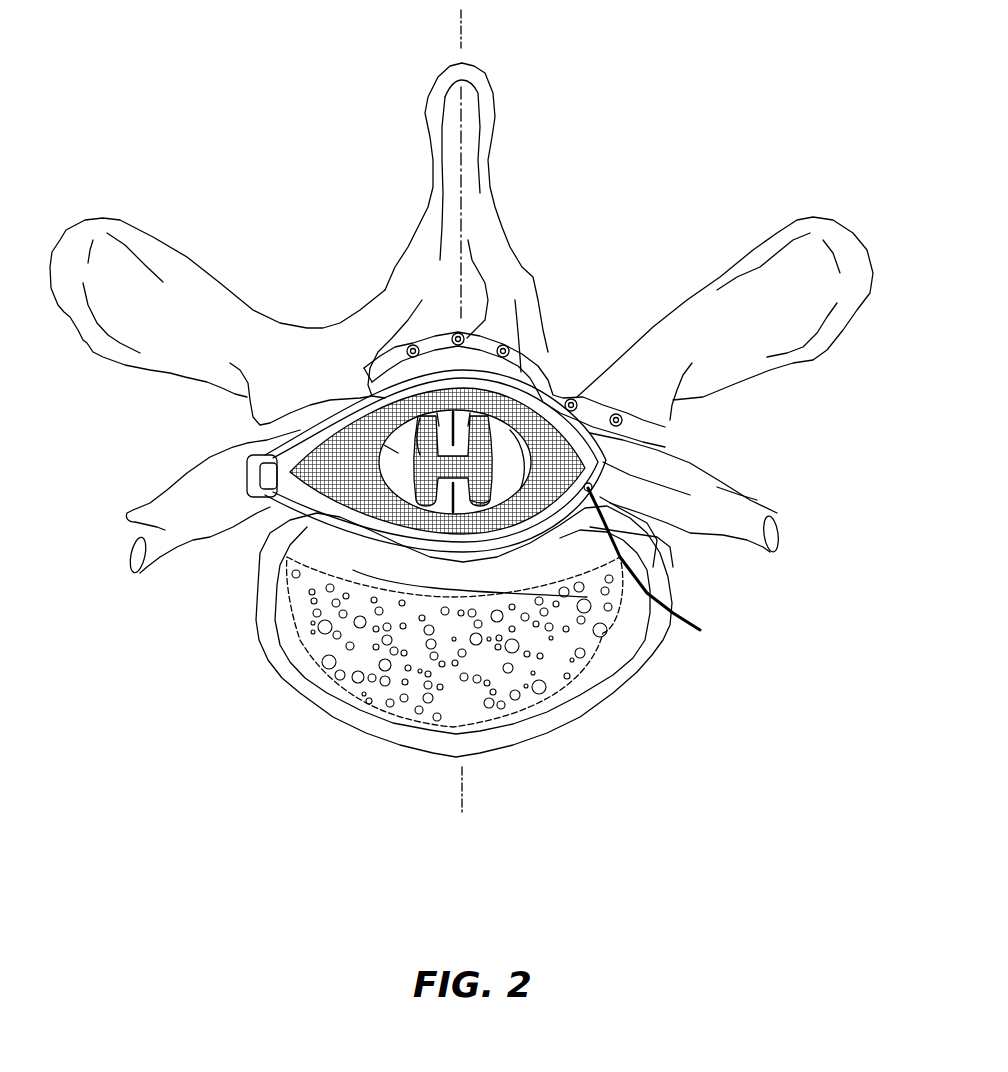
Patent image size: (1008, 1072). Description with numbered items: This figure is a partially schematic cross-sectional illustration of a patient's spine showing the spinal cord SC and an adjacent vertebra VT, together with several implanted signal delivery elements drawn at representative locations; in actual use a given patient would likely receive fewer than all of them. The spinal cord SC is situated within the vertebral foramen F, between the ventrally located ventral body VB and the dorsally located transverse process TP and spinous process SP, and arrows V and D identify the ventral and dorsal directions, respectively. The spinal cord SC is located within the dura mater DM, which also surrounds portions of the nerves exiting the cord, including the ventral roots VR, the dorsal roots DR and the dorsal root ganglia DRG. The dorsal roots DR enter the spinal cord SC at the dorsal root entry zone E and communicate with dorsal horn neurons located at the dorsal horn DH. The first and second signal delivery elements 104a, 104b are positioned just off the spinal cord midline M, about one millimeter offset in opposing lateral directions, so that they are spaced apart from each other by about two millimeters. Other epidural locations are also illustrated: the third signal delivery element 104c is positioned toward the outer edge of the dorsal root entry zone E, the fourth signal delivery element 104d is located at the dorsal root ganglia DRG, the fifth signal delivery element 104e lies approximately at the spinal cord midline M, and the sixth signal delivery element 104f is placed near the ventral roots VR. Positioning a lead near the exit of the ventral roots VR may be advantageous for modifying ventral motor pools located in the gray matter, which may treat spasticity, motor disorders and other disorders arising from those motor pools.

The dorsal direction arrow D is at (462, 28).
The ventral direction arrow V is at (460, 793).
The spinous process SP is at (486, 112).
The spinal cord midline M is at (462, 167).
The transverse process TP is at (93, 248).
The spinal cord SC is at (398, 448).
The dorsal root entry zone E is at (552, 360).
The vertebra VT is at (215, 417).
The dorsal roots DR is at (660, 445).
The dorsal root ganglia DRG is at (613, 470).
The dura mater DM is at (220, 510).
The vertebral foramen F is at (585, 497).
The dorsal horn DH is at (450, 472).
The ventral roots VR is at (513, 500).
The ventral body VB is at (543, 697).
The first signal delivery element 104a is at (409, 345).
The second signal delivery element 104b is at (510, 347).
The third signal delivery element 104c is at (575, 398).
The fourth signal delivery element 104d is at (623, 410).
The fifth signal delivery element 104e is at (462, 333).
The sixth signal delivery element 104f is at (676, 565).